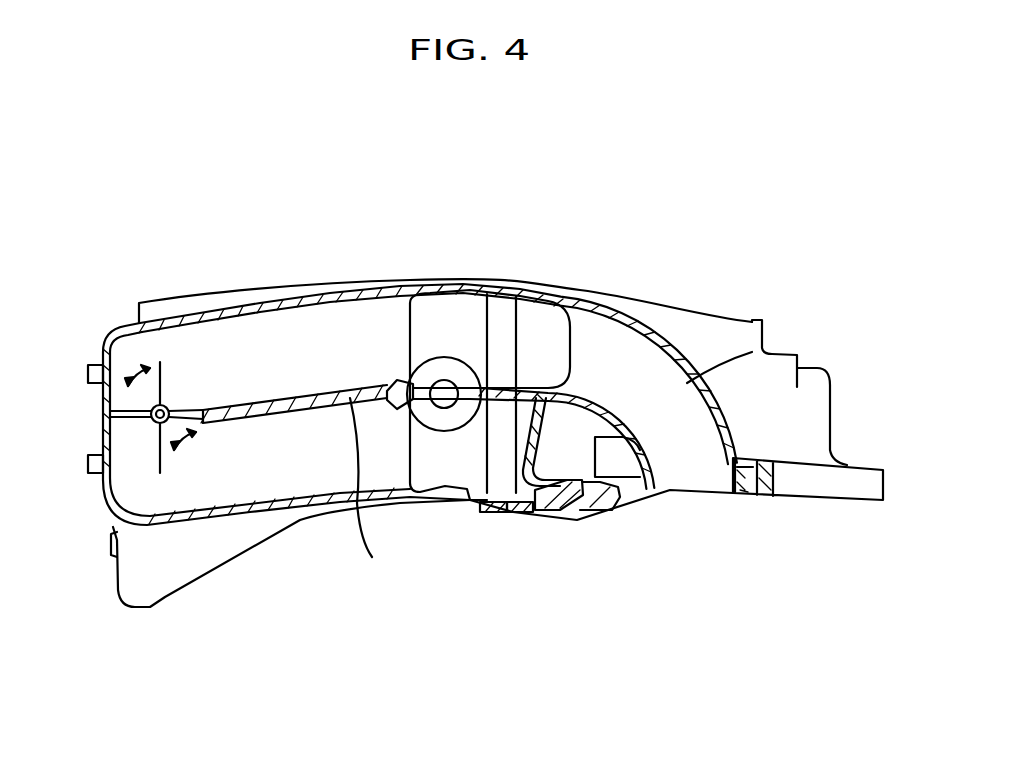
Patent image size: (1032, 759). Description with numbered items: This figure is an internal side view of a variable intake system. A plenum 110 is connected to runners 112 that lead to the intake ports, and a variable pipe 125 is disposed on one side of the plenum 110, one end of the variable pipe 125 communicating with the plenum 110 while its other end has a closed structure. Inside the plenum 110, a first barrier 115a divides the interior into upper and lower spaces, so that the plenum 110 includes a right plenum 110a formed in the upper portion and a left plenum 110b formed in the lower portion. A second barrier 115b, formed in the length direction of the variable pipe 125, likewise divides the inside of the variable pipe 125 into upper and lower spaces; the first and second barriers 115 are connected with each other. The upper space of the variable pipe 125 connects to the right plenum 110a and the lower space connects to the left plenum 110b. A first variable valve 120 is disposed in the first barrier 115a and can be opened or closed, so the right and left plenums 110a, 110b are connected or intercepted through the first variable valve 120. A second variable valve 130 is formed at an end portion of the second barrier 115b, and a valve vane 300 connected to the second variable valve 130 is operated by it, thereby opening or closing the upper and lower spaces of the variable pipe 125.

The plenum 110 is at (450, 341).
The right plenum 110a is at (527, 437).
The left plenum 110b is at (550, 330).
The runner 112 is at (763, 350).
The first and second barriers 115 is at (485, 521).
The first barrier 115a is at (500, 400).
The second barrier 115b is at (376, 492).
The first variable valve 120 is at (440, 355).
The variable pipe 125 is at (113, 332).
The second variable valve 130 is at (150, 435).
The valve vane 300 is at (103, 413).